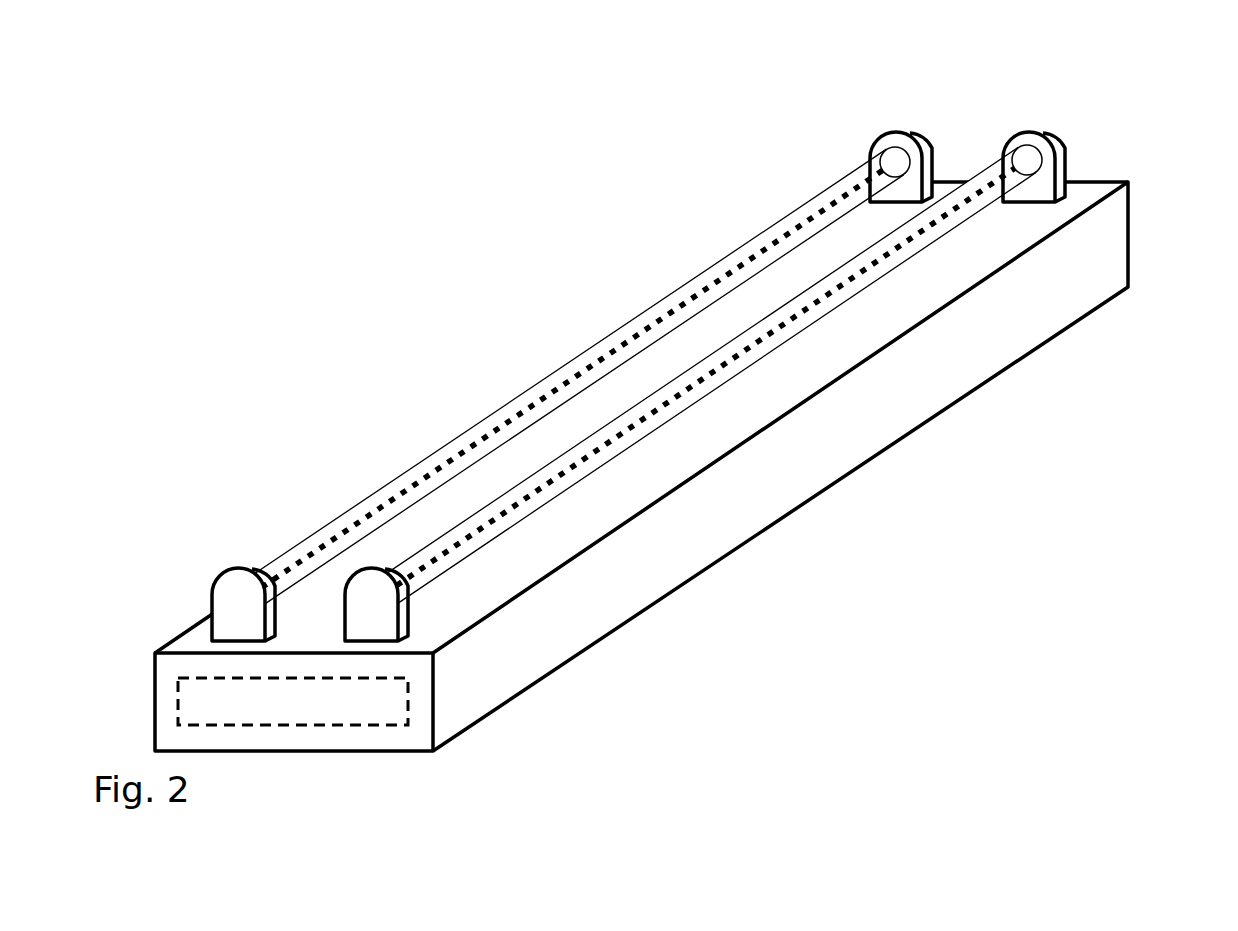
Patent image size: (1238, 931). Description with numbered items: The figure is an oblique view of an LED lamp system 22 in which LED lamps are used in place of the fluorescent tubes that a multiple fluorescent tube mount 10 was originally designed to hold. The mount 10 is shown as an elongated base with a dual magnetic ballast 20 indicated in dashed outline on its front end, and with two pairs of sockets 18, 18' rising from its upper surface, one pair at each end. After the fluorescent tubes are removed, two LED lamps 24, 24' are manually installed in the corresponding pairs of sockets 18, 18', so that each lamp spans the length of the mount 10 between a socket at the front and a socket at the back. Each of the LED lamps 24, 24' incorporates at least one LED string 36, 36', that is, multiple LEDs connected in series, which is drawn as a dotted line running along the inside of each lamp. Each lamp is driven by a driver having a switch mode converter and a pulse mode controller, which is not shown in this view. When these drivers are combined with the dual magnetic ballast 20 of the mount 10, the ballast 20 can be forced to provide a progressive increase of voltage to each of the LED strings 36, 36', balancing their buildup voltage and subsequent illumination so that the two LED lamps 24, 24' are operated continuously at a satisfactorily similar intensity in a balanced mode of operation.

The multiple fluorescent tube mount 10 is at (835, 453).
The socket 18 is at (780, 447).
The socket 18' is at (512, 356).
The dual magnetic ballast 20 is at (380, 712).
The LED lamp system 22 is at (910, 594).
The LED lamp 24 is at (711, 376).
The LED lamp 24' is at (572, 378).
The LED string 36 is at (757, 380).
The LED string 36' is at (566, 367).